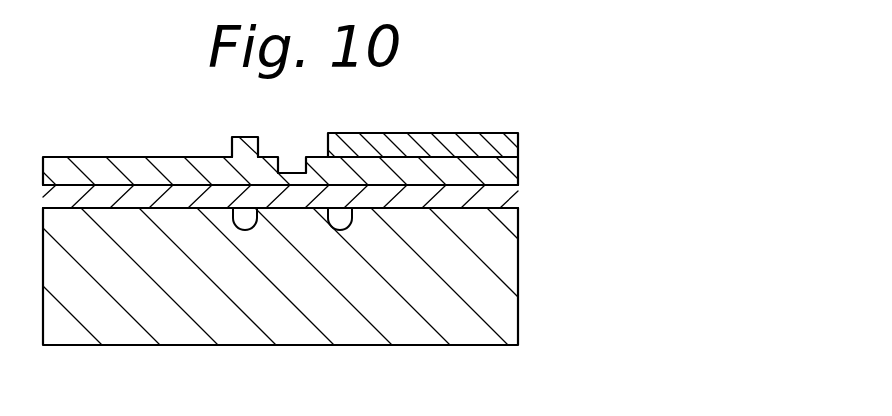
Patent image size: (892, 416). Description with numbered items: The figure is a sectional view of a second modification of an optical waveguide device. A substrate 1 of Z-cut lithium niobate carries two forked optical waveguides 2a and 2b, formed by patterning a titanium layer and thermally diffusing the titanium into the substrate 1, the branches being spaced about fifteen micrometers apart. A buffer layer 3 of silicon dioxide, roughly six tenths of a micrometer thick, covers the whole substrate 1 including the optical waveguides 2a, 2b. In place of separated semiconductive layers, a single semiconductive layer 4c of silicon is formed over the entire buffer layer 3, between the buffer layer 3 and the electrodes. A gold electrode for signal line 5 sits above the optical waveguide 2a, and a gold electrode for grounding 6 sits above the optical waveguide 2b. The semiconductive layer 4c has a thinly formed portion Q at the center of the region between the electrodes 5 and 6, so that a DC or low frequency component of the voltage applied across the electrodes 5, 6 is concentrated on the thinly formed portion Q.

The substrate 1 is at (510, 245).
The forked optical waveguide 2a is at (244, 222).
The forked optical waveguide 2b is at (337, 222).
The buffer layer 3 is at (516, 190).
The semiconductive layer 4c is at (88, 167).
The electrode for signal line 5 is at (244, 136).
The electrode for grounding 6 is at (420, 133).
The thinly formed portion Q is at (292, 160).